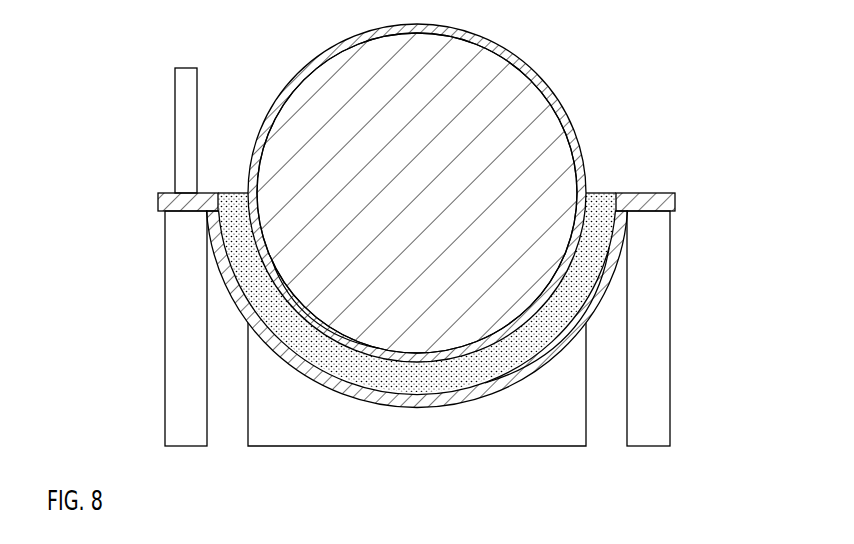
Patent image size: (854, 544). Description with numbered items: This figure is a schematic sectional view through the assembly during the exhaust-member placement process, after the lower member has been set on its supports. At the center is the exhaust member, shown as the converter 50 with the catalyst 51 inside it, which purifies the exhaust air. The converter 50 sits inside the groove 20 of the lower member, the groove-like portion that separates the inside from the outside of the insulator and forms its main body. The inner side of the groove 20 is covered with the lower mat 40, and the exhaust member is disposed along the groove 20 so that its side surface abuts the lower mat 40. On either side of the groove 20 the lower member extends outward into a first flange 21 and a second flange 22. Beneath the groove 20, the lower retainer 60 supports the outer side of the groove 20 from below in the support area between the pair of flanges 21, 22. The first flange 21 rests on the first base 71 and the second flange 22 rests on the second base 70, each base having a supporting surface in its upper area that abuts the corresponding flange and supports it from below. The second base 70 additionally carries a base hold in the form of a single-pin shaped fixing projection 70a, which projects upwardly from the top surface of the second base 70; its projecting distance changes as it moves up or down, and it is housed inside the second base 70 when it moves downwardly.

The groove 20 is at (375, 406).
The first flange 21 is at (657, 197).
The second flange 22 is at (160, 200).
The lower mat 40 is at (603, 207).
The converter 50 is at (548, 88).
The catalyst 51 is at (467, 88).
The lower retainer 60 is at (472, 430).
The second base 70 is at (180, 315).
The fixing projection 70a is at (186, 68).
The first base 71 is at (653, 302).